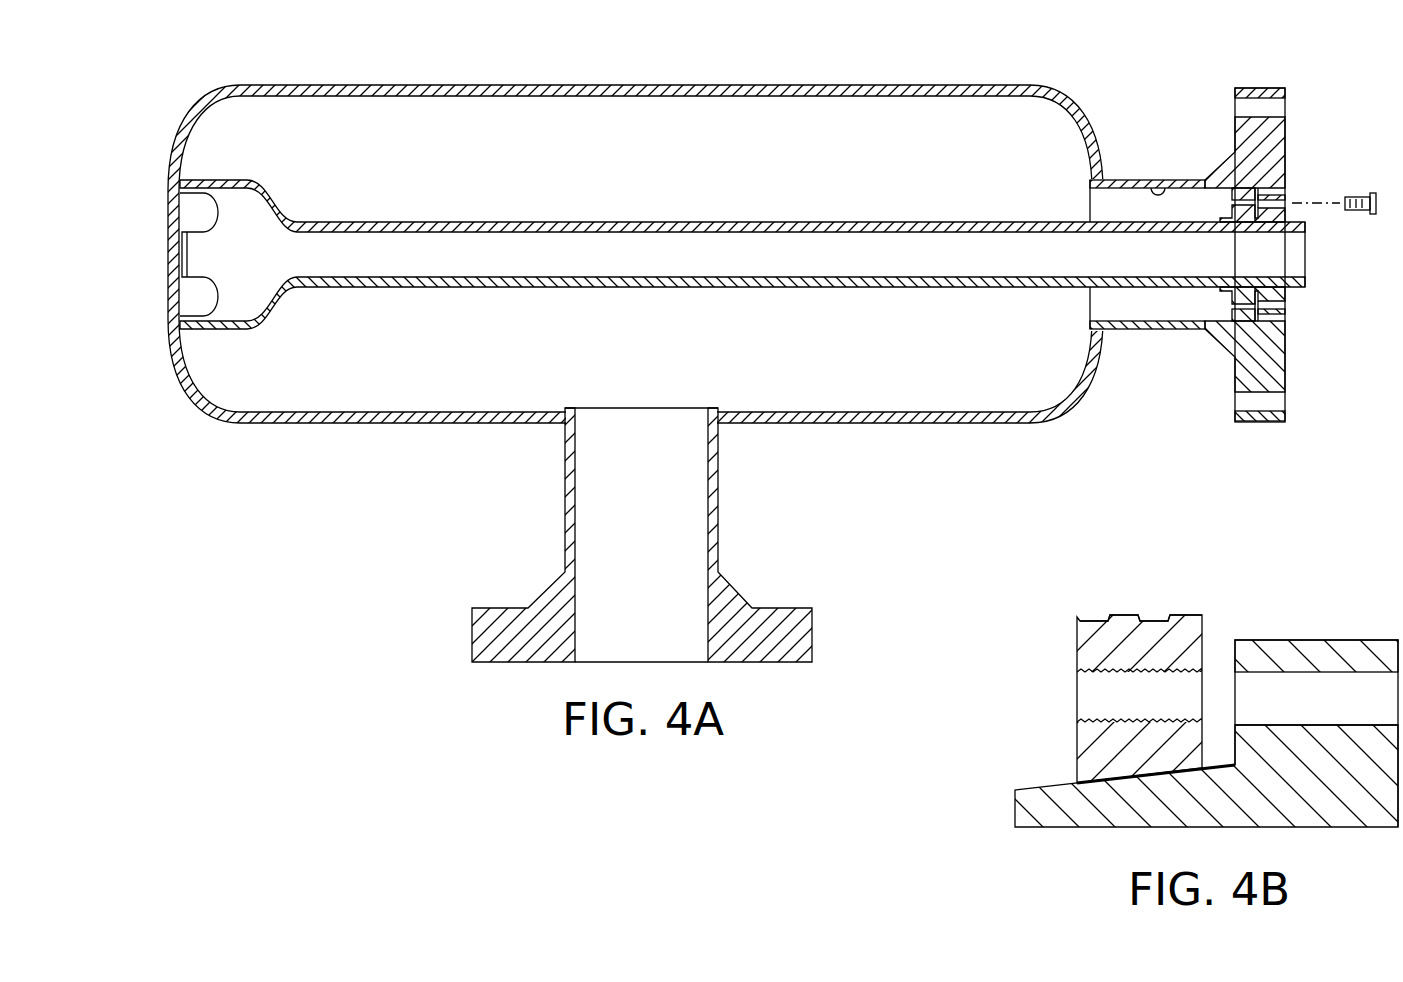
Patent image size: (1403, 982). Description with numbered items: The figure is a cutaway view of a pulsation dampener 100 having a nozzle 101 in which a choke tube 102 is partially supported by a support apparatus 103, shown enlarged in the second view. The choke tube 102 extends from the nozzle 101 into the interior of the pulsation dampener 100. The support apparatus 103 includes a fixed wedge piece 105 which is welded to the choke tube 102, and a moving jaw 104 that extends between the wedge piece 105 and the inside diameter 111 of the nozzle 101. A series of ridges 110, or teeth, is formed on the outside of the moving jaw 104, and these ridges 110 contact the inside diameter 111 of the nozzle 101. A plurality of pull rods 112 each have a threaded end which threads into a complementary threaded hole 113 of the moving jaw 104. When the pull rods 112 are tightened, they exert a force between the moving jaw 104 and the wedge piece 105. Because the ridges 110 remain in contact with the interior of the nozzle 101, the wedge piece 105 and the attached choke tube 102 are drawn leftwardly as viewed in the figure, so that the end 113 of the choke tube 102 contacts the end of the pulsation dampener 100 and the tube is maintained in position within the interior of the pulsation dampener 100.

In FIG. 4A, the pulsation dampener 100 is at (692, 68).
In FIG. 4A, the nozzle 101 is at (1123, 180).
In FIG. 4A, the choke tube 102 is at (612, 222).
In FIG. 4A, the support apparatus 103 is at (1254, 168).
In FIG. 4B, the support apparatus 103 is at (1243, 592).
In FIG. 4B, the moving jaw 104 is at (1077, 750).
In FIG. 4B, the wedge piece 105 is at (1015, 810).
In FIG. 4B, the ridges 110 is at (1155, 612).
In FIG. 4A, the inside diameter 111 is at (1164, 186).
In FIG. 4A, the pull rods 112 is at (1358, 195).
In FIG. 4A, the end of the choke tube 113 is at (217, 212).